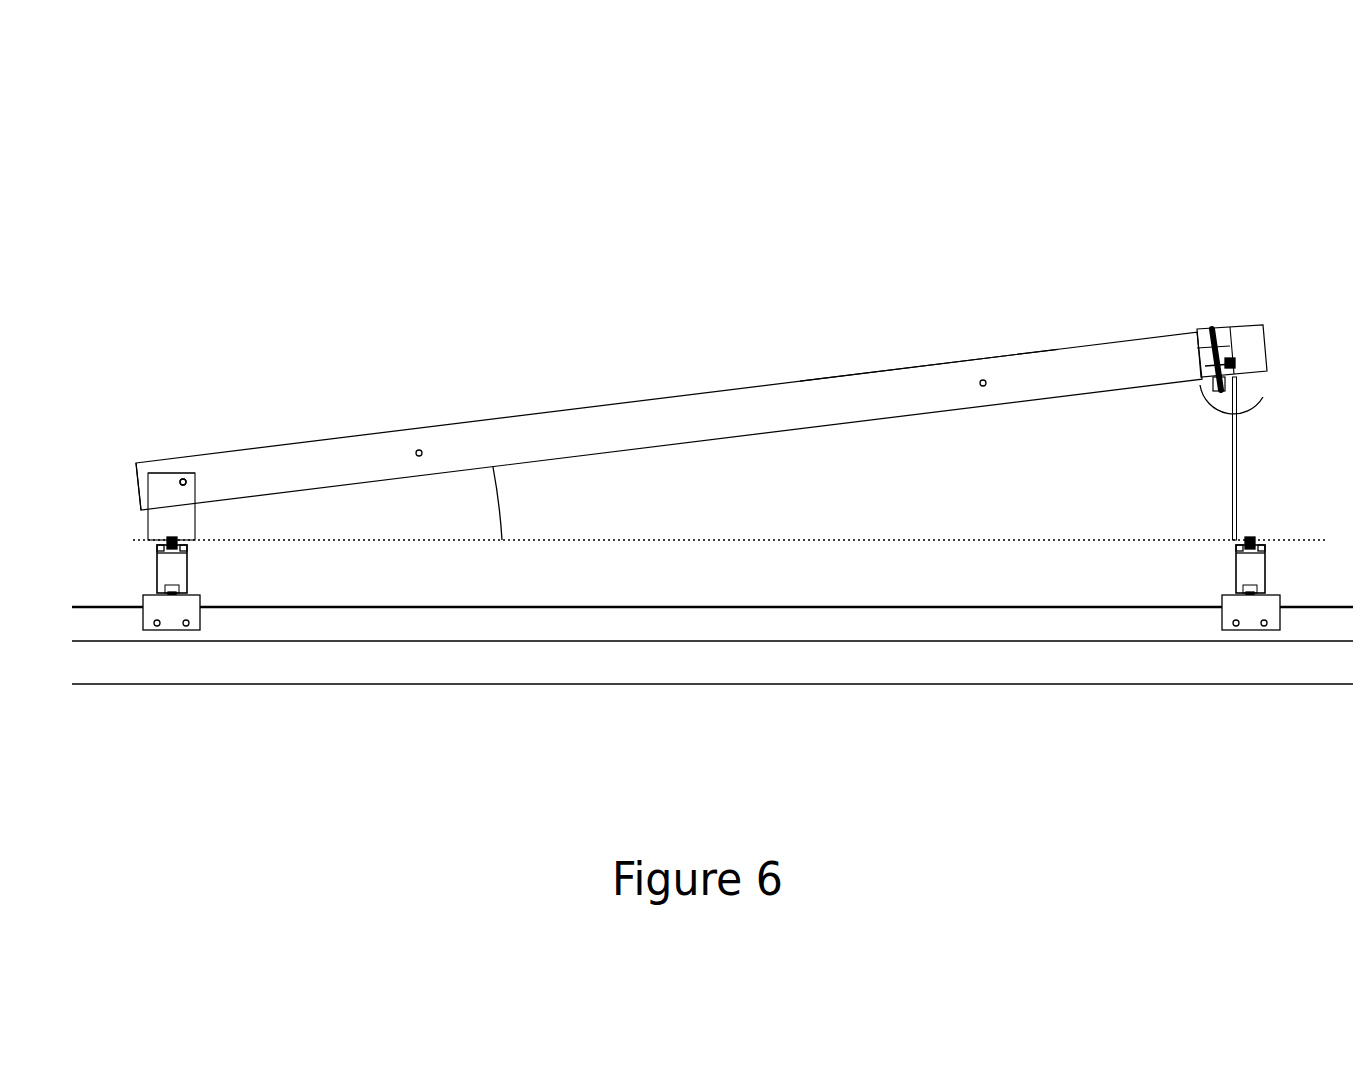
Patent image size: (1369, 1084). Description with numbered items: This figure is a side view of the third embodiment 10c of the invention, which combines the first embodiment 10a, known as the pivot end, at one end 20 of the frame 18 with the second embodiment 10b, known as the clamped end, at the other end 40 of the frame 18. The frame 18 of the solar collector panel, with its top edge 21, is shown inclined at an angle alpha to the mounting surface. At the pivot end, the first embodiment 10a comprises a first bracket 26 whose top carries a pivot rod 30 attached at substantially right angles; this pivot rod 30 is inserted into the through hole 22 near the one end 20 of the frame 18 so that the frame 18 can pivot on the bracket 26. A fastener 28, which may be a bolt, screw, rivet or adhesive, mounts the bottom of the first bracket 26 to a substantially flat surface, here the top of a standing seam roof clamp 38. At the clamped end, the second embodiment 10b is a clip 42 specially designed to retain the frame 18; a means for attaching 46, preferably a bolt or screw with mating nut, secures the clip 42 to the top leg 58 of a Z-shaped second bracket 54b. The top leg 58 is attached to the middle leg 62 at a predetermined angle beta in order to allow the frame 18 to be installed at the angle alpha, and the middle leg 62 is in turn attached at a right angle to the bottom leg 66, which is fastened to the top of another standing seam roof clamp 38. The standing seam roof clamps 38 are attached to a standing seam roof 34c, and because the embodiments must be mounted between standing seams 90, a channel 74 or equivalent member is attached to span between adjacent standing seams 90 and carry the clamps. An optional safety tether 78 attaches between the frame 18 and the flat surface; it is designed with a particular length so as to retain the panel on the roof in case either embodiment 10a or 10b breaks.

The first embodiment 10a is at (170, 440).
The second embodiment 10b is at (1212, 258).
The third embodiment 10c is at (702, 310).
The frame for solar collector panel 18 is at (953, 387).
The one end of frame 20 is at (136, 476).
The top edge of frame 21 is at (1058, 352).
The through hole in frame 22 is at (183, 480).
The pivot rod 30 is at (183, 482).
The first bracket 26 is at (187, 513).
The fastener 28 is at (170, 605).
The standing seam roof 34c is at (905, 685).
The standing seam roof clamp 38 is at (1227, 613).
The other end of frame 40 is at (1240, 328).
The clip 42 is at (1228, 328).
The means for attaching clip 46 is at (1222, 343).
The Z-shaped second bracket 54b is at (1212, 422).
The top leg of second bracket 58 is at (1200, 388).
The middle leg of second bracket 62 is at (1237, 437).
The bottom leg of second bracket 66 is at (1262, 540).
The bar, channel or equivalent member 74 is at (1243, 562).
The safety tether 78 is at (1237, 360).
The standing seam 90 is at (728, 622).